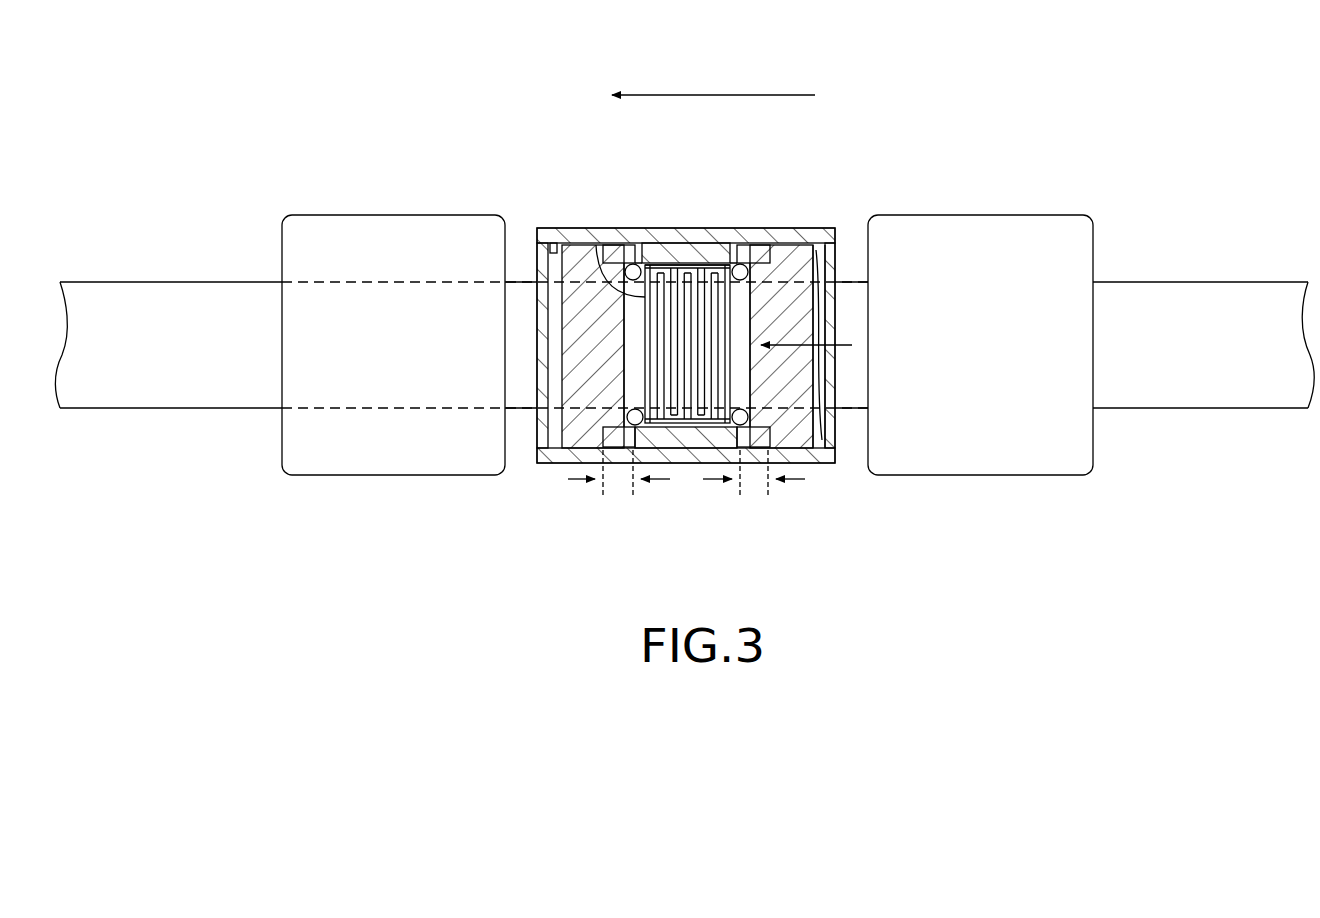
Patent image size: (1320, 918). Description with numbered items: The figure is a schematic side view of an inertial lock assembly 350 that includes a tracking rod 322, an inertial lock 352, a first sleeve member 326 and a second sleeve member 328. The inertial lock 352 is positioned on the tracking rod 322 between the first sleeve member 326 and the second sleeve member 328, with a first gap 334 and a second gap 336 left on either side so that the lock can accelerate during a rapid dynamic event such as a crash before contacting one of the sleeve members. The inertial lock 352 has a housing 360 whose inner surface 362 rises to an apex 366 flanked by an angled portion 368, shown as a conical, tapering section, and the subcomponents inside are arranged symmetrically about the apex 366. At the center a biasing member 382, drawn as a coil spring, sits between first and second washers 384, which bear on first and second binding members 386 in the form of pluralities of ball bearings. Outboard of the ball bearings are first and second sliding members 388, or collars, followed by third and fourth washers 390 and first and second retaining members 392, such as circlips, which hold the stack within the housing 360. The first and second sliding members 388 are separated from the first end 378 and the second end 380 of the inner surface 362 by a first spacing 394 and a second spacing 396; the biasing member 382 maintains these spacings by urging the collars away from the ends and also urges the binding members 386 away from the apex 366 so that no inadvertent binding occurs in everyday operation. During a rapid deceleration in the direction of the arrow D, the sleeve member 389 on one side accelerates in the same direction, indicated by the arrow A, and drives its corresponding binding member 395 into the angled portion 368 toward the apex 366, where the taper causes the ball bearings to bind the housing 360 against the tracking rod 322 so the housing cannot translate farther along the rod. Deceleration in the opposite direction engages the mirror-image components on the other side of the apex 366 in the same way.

The tracking rod 322 is at (95, 398).
The first sleeve member 326 is at (307, 215).
The second sleeve member 328 is at (1080, 215).
The first gap 334 is at (497, 218).
The second gap 336 is at (853, 238).
The inertial lock assembly 350 is at (237, 132).
The inertial lock 352 is at (575, 158).
The housing 360 is at (766, 243).
The inner surface 362 is at (628, 248).
The apex 366 is at (680, 262).
The angled portion 368 is at (700, 262).
The first end 378 is at (635, 428).
The second end 380 is at (742, 428).
The biasing member 382 is at (700, 395).
The first and second washers 384 is at (600, 258).
The first and second binding members 386 is at (738, 264).
The first and second sliding members 388 is at (803, 248).
The sleeve member 389 is at (820, 395).
The third and fourth washers 390 is at (556, 245).
The first and second retaining members 392 is at (546, 243).
The first spacing 394 is at (575, 480).
The binding member 395 is at (745, 262).
The second spacing 396 is at (798, 480).
The arrow A is at (845, 345).
The arrow D is at (703, 94).